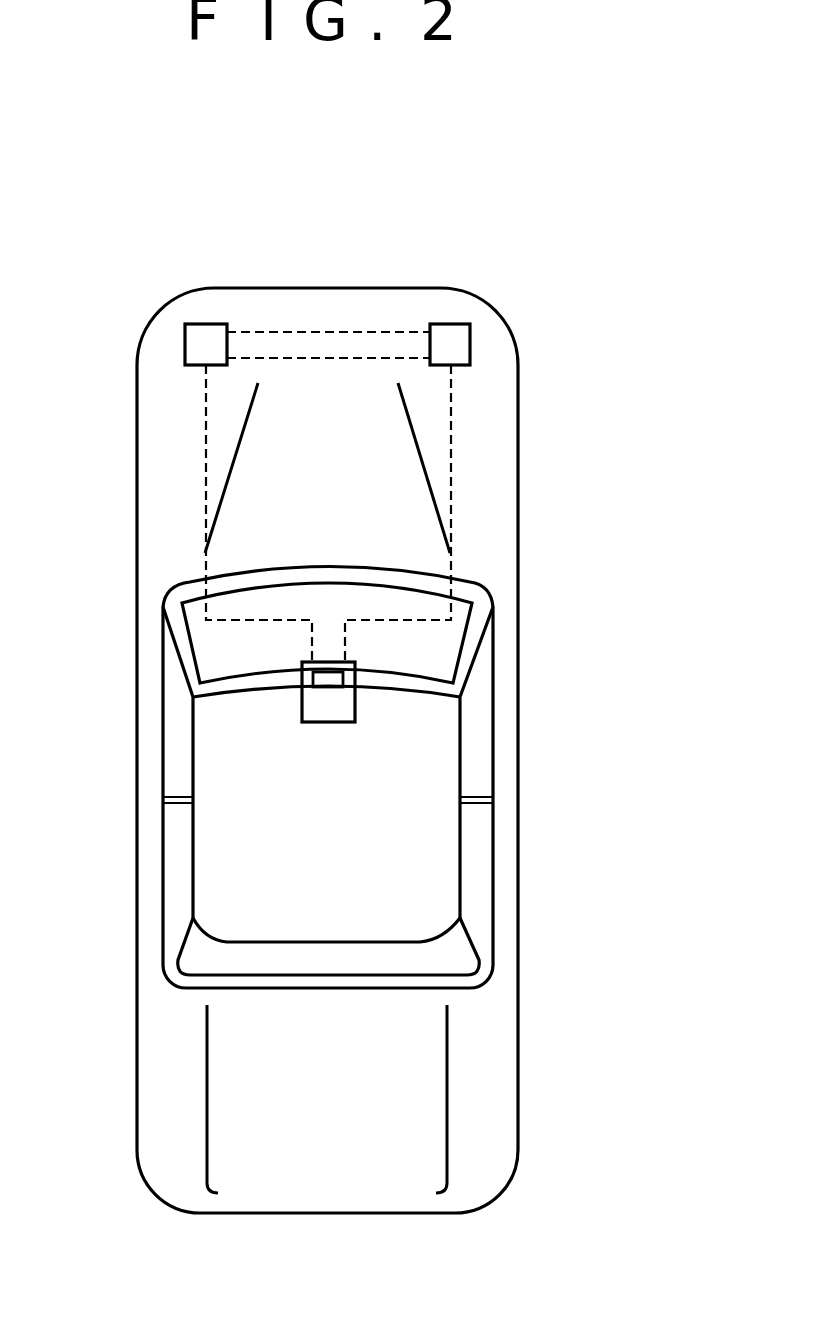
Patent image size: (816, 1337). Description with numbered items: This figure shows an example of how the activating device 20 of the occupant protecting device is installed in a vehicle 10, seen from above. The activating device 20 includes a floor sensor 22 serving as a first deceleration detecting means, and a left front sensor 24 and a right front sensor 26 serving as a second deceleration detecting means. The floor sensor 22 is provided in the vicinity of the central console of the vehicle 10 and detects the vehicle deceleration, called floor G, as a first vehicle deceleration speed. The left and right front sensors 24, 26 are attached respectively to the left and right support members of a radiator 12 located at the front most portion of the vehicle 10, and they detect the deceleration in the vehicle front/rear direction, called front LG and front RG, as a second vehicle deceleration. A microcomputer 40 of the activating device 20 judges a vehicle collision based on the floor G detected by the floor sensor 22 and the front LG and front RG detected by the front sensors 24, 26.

The vehicle 10 is at (495, 1033).
The radiator 12 is at (352, 332).
The activating device 20 is at (538, 752).
The floor sensor 22 is at (328, 680).
The left front sensor 24 is at (207, 347).
The right front sensor 26 is at (450, 333).
The microcomputer 40 is at (312, 703).